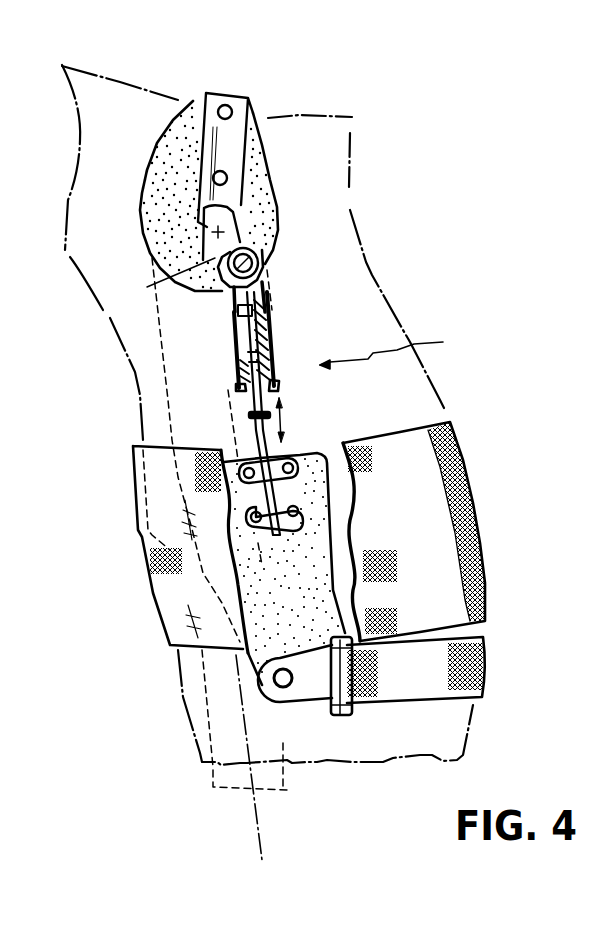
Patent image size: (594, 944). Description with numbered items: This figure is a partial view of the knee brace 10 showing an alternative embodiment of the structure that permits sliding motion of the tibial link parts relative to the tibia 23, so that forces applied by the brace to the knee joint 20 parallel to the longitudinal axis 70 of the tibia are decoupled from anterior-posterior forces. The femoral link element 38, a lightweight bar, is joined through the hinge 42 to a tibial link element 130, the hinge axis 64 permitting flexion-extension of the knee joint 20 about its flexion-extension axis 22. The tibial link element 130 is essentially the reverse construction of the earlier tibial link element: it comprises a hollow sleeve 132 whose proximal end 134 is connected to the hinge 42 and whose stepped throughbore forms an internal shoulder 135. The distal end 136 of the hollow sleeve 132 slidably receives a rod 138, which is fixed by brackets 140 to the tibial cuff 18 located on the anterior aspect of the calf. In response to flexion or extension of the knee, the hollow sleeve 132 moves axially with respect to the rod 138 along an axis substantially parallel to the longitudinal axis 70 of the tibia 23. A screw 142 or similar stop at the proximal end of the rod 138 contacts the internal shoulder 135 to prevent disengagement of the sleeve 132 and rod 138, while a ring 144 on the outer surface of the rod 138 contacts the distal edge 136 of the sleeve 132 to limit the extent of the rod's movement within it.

The knee brace 10 is at (313, 63).
The tibial cuff 18 is at (333, 555).
The knee joint 20 is at (113, 263).
The flexion-extension axis 22 is at (237, 215).
The tibia 23 is at (215, 772).
The femoral link element 38 is at (243, 99).
The hinge 42 is at (263, 254).
The hinge axis 64 is at (259, 270).
The longitudinal axis 70 is at (258, 830).
The tibial link element 130 is at (405, 349).
The hollow sleeve 132 is at (233, 345).
The proximal end 134 is at (200, 292).
The shoulder 135 is at (270, 342).
The distal end 136 is at (276, 386).
The rod 138 is at (257, 427).
The brackets 140 is at (298, 496).
The screw 142 is at (158, 280).
The ring 144 is at (268, 428).